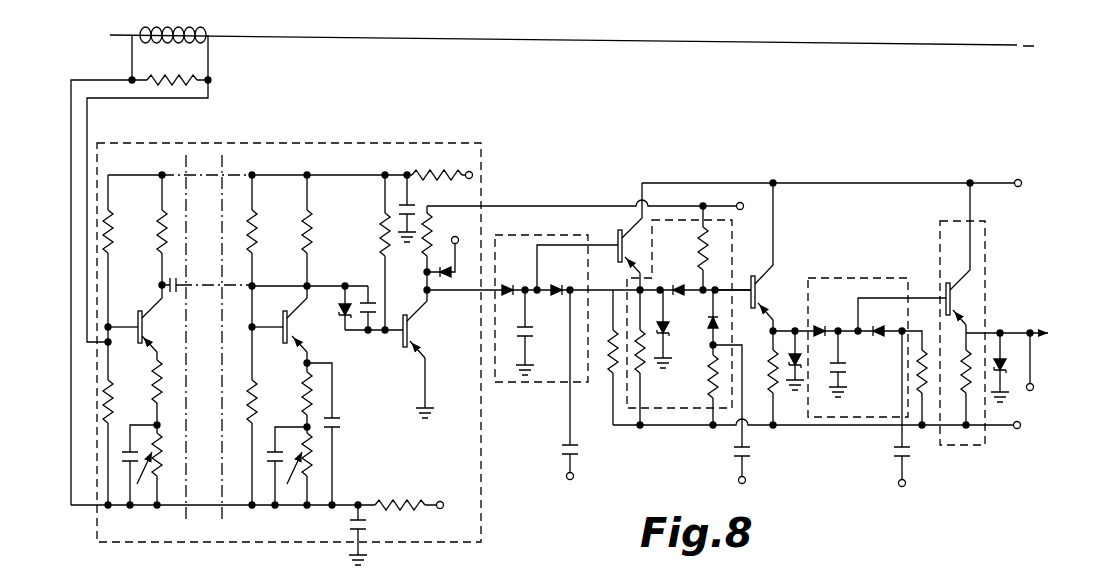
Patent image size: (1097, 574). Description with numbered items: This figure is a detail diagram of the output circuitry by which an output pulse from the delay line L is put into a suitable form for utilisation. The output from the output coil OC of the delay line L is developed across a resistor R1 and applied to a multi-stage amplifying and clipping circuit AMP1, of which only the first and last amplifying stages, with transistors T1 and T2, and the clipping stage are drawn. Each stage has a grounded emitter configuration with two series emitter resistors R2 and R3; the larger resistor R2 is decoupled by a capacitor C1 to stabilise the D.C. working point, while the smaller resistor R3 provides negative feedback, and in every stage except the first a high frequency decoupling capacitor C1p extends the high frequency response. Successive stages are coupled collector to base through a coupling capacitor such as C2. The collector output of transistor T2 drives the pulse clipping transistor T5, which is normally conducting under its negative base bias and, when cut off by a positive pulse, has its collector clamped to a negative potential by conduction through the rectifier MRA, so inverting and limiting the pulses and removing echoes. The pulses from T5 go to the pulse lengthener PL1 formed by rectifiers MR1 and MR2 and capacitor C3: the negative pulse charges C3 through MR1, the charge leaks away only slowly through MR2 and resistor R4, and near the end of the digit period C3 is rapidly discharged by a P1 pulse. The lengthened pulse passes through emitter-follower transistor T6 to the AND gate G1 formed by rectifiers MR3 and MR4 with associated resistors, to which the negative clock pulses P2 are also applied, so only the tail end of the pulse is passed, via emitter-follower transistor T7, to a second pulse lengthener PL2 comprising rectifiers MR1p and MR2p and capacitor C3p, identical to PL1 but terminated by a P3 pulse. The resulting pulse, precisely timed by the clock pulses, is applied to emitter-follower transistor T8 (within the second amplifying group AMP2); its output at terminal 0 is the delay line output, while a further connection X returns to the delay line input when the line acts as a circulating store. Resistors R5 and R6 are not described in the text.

The delay line L is at (262, 39).
The output coil OC is at (160, 46).
The resistor R1 is at (180, 86).
The multi-stage amplifying and clipping circuit AMP1 is at (324, 151).
The coupling capacitor C2 is at (174, 276).
The transistor T1 is at (142, 331).
The transistor T2 is at (287, 331).
The resistor R3 is at (158, 390).
The resistor R2 is at (160, 455).
The capacitor C1 is at (128, 455).
The high frequency decoupling capacitor C1p is at (340, 432).
The pulse clipping transistor T5 is at (424, 354).
The rectifier MRA is at (438, 260).
The rectifier MR1 is at (524, 278).
The rectifier MR2 is at (568, 278).
The capacitor C3 is at (542, 332).
The pulse lengthener PL1 is at (512, 383).
The P1 pulse P1 is at (596, 392).
The resistor R4 is at (608, 362).
The resistor R6 is at (646, 380).
The emitter-follower transistor T6 is at (628, 242).
The resistor R5 is at (688, 246).
The AND gate G1 is at (684, 402).
The rectifier MR3 is at (702, 286).
The rectifier MR4 is at (720, 332).
The clock pulses P2 is at (753, 424).
The emitter-follower transistor T7 is at (755, 304).
The second pulse lengthener PL2 is at (824, 288).
The rectifier MR1p is at (834, 319).
The rectifier MR2p is at (886, 346).
The capacitor C3p is at (848, 370).
The P3 pulse P3 is at (928, 418).
The second amplifier AMP2 is at (944, 231).
The emitter-follower transistor T8 is at (965, 304).
The output connection X is at (1009, 322).
The terminal 0 is at (1031, 378).